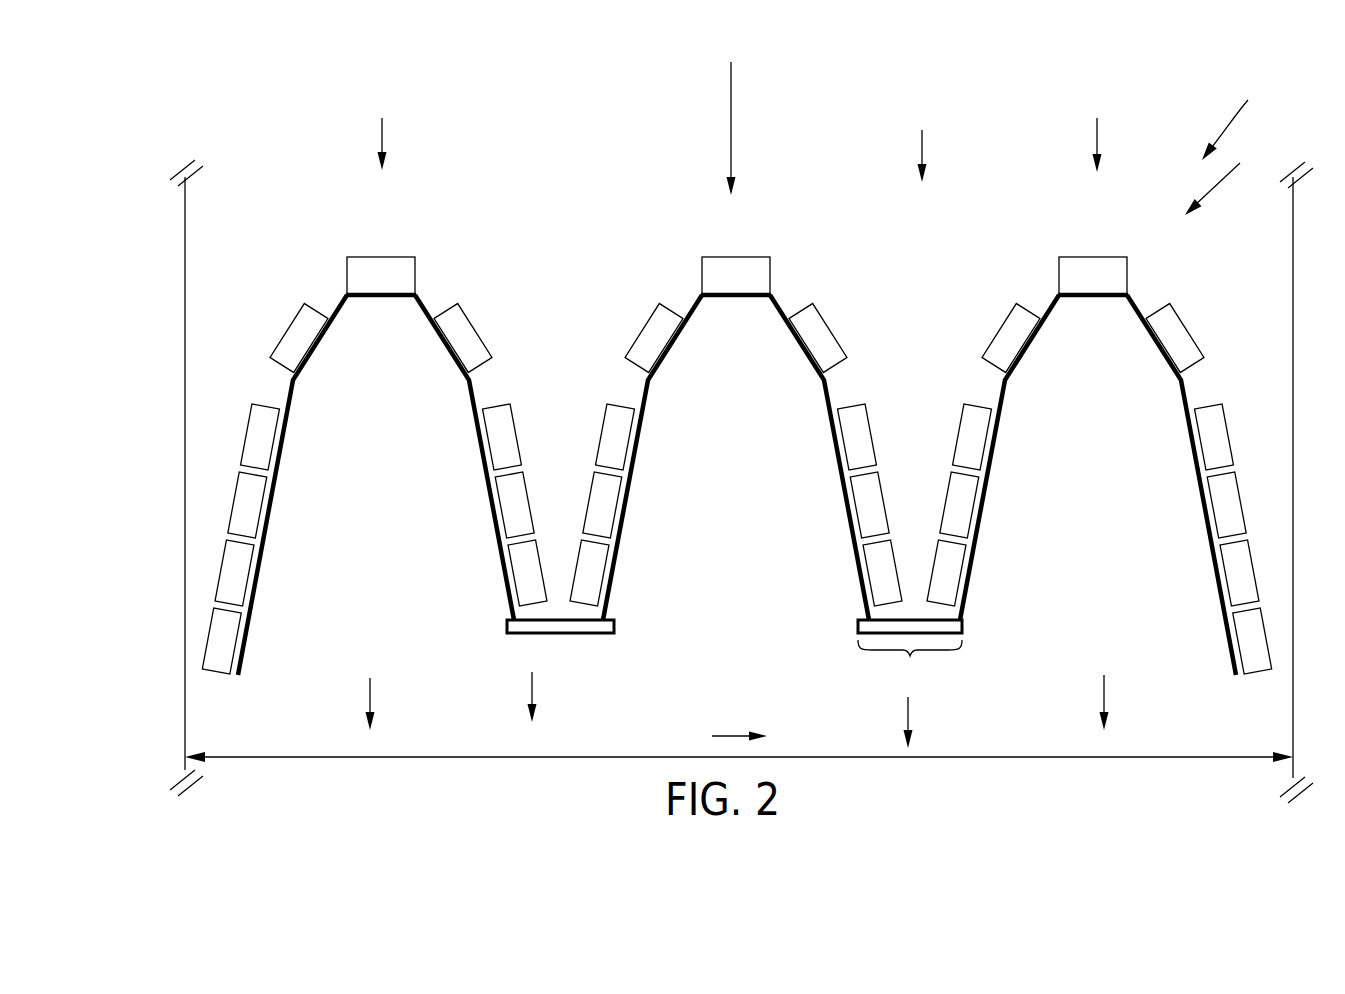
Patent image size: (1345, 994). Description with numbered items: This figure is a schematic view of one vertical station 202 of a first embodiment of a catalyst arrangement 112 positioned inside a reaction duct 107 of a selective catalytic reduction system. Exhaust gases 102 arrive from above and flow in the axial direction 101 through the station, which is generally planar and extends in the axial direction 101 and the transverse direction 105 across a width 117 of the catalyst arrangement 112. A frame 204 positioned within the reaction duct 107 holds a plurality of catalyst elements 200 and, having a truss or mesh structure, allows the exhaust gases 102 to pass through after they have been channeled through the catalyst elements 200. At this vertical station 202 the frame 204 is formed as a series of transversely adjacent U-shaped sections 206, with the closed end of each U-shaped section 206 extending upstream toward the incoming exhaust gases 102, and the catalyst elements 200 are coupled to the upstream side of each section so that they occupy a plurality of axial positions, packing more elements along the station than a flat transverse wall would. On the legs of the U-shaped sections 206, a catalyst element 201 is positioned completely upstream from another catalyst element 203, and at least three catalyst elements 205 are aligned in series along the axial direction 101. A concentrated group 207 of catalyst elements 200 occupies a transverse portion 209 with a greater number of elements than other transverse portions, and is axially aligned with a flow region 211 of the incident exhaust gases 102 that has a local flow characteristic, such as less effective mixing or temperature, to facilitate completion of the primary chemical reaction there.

The axial direction 101 is at (731, 118).
The exhaust gases 102 is at (382, 135).
The transverse direction 105 is at (722, 736).
The reaction duct 107 is at (185, 408).
The catalyst arrangement 112 is at (1242, 115).
The width 117 is at (507, 757).
The catalyst elements 200 is at (1233, 490).
The catalyst element 201 is at (449, 310).
The vertical station 202 is at (1228, 174).
The catalyst element 203 is at (248, 510).
The frame 204 is at (617, 577).
The catalyst elements 205 is at (527, 497).
The U-shaped sections 206 is at (387, 297).
The concentrated group 207 is at (928, 540).
The transverse portion 209 is at (734, 653).
The flow region 211 is at (922, 145).